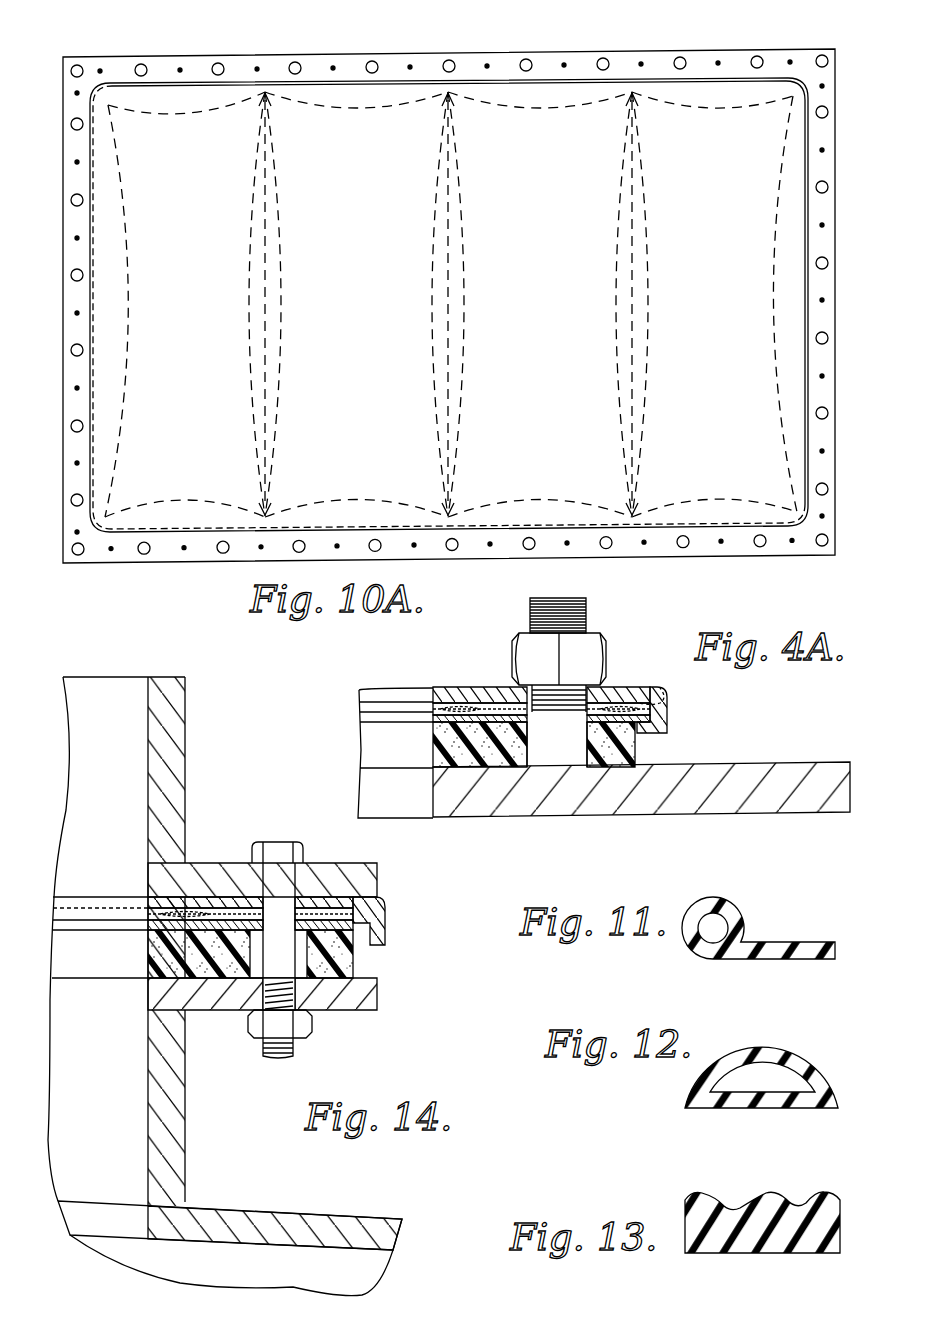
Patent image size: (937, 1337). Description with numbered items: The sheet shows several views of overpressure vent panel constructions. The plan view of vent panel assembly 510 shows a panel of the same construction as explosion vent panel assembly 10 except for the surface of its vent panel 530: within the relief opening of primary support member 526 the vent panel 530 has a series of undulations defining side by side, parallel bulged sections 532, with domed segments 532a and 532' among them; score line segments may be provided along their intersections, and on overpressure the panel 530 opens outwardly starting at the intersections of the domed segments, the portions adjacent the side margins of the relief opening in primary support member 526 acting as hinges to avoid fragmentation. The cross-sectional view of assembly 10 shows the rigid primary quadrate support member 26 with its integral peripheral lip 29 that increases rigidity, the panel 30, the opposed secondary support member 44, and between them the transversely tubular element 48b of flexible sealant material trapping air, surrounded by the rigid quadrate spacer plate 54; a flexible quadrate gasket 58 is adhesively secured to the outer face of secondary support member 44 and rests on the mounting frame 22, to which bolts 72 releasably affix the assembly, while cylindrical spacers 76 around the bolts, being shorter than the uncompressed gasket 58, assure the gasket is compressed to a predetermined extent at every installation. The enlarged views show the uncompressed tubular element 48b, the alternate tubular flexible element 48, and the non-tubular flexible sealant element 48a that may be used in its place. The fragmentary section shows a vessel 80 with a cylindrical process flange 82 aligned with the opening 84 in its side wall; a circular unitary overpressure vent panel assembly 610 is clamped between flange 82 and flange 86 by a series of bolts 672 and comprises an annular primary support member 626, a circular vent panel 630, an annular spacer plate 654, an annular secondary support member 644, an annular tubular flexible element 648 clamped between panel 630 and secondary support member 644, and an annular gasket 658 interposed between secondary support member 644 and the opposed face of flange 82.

In FIG. 10A, the vent panel assembly 510 is at (644, 42).
In FIG. 10A, the primary support member 526 is at (130, 566).
In FIG. 10A, the vent panel 530 is at (190, 522).
In FIG. 10A, the domed segment 532a is at (193, 304).
In FIG. 10A, the domed segment 532' is at (364, 304).
In FIG. 10A, the bulged sections 532 is at (714, 304).
In FIG. 4A, the explosion vent panel assembly 10 is at (617, 684).
In FIG. 4A, the bolts 72 is at (540, 601).
In FIG. 4A, the mounting frame 22 is at (790, 774).
In FIG. 4A, the cylindrical spacers 76 is at (586, 765).
In FIG. 4A, the panel 30 is at (376, 690).
In FIG. 4A, the primary quadrate support member 26 is at (485, 690).
In FIG. 4A, the tubular element 48b is at (423, 705).
In FIG. 11, the tubular element 48b is at (765, 946).
In FIG. 4A, the secondary support member 44 is at (588, 715).
In FIG. 4A, the gasket 58 is at (433, 752).
In FIG. 4A, the spacer plate 54 is at (645, 704).
In FIG. 4A, the peripheral lip 29 is at (669, 721).
In FIG. 14, the circular unitary overpressure vent panel assembly 610 is at (385, 898).
In FIG. 14, the circular vent panel 630 is at (72, 906).
In FIG. 14, the vessel 80 is at (296, 1212).
In FIG. 14, the flange 86 is at (312, 880).
In FIG. 14, the annular spacer plate 654 is at (232, 922).
In FIG. 14, the annular primary support member 626 is at (337, 903).
In FIG. 14, the annular tubular flexible element 648 is at (153, 917).
In FIG. 14, the opening 84 is at (150, 934).
In FIG. 14, the annular secondary support member 644 is at (356, 924).
In FIG. 14, the annular gasket 658 is at (358, 972).
In FIG. 14, the cylindrical process flange 82 is at (358, 1004).
In FIG. 14, the bolts 672 is at (249, 1032).
In FIG. 12, the tubular flexible element 48 is at (770, 1052).
In FIG. 13, the non-tubular flexible sealant element 48a is at (757, 1200).